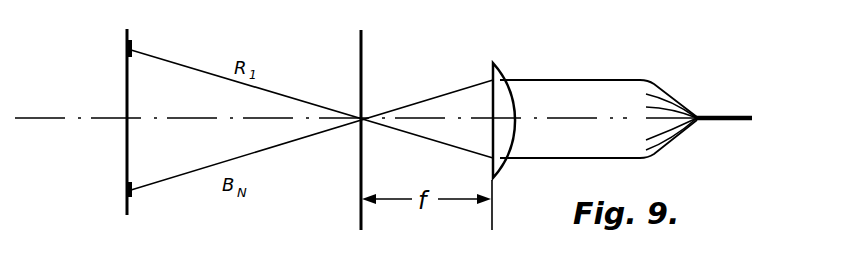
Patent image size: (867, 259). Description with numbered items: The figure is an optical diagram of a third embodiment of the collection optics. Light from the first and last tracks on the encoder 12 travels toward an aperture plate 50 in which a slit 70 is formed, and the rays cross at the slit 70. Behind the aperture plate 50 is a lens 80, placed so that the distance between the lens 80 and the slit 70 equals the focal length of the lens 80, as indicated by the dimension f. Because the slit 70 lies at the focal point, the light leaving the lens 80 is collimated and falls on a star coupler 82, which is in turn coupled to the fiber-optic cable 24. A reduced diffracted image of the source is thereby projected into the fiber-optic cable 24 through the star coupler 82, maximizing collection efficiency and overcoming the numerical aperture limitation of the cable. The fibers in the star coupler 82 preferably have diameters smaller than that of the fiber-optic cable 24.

The encoder 12 is at (126, 54).
The aperture plate 50 is at (359, 43).
The slit 70 is at (365, 115).
The lens 80 is at (500, 77).
The star coupler 82 is at (670, 79).
The fiber-optic cable 24 is at (705, 122).